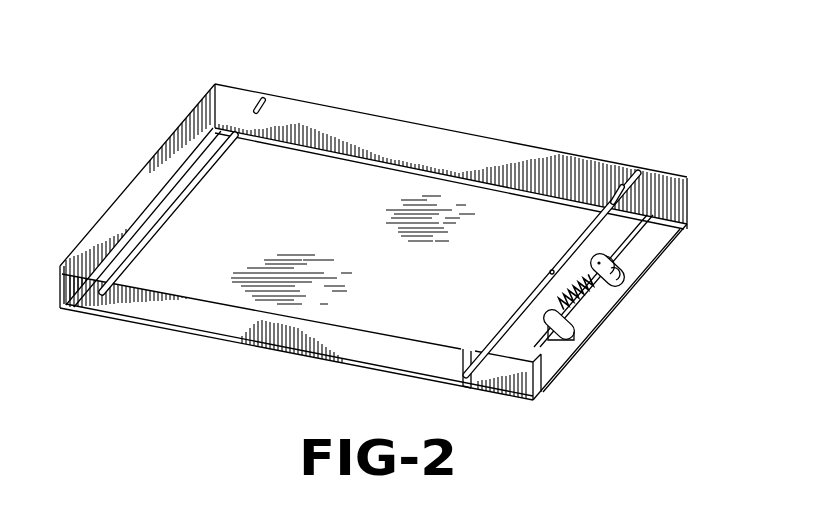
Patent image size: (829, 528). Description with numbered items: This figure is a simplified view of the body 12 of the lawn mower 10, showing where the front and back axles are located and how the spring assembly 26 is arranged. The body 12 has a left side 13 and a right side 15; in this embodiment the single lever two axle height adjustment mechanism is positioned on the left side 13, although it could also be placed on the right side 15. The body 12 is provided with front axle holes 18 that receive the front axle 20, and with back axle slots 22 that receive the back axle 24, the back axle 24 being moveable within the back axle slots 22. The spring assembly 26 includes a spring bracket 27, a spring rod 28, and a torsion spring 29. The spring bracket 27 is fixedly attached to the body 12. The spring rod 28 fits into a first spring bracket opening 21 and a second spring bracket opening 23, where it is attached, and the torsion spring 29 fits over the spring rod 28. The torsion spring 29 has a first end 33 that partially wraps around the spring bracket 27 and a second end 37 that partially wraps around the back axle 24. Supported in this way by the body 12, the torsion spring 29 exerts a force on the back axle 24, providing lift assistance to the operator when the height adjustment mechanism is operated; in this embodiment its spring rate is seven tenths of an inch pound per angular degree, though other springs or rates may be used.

The lawn mower 10 is at (110, 138).
The body 12 is at (120, 221).
The left side 13 is at (468, 158).
The right side 15 is at (200, 318).
The front axle holes 18 is at (248, 113).
The front axle 20 is at (160, 220).
The first spring bracket opening 21 is at (600, 259).
The back axle slots 22 is at (620, 190).
The second spring bracket opening 23 is at (553, 330).
The back axle 24 is at (578, 243).
The spring assembly 26 is at (502, 311).
The spring bracket 27 is at (607, 270).
The spring rod 28 is at (566, 322).
The torsion spring 29 is at (585, 292).
The first end 33 is at (556, 338).
The second end 37 is at (552, 272).